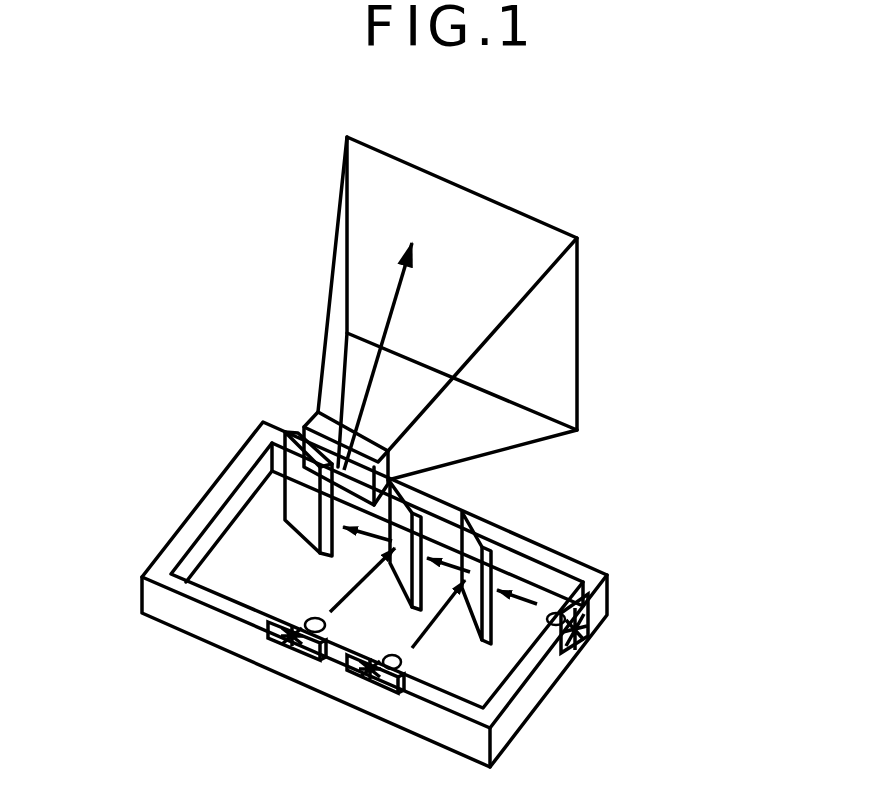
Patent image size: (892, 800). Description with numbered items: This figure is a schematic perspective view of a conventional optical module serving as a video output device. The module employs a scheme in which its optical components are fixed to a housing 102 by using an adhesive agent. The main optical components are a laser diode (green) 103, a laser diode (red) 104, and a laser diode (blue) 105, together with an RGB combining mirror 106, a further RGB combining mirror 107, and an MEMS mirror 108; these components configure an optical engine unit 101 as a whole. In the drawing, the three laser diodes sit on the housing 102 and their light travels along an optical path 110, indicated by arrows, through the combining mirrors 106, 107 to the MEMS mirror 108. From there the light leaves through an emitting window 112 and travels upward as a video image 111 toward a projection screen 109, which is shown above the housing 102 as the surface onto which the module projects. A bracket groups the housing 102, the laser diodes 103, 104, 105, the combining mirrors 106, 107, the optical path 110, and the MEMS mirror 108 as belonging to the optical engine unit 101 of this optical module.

The optical engine unit 101 is at (722, 410).
The housing 102 is at (518, 702).
The laser diode (green) 103 is at (586, 640).
The laser diode (red) 104 is at (346, 680).
The laser diode (blue) 105 is at (266, 646).
The RGB combining mirror 106 is at (492, 548).
The RGB combining mirror 107 is at (424, 518).
The MEMS mirror 108 is at (300, 493).
The projection screen 109 is at (363, 205).
The optical path 110 is at (410, 647).
The video image 111 is at (390, 308).
The emitting window 112 is at (360, 433).